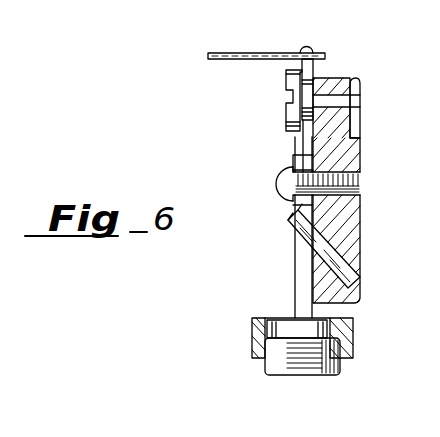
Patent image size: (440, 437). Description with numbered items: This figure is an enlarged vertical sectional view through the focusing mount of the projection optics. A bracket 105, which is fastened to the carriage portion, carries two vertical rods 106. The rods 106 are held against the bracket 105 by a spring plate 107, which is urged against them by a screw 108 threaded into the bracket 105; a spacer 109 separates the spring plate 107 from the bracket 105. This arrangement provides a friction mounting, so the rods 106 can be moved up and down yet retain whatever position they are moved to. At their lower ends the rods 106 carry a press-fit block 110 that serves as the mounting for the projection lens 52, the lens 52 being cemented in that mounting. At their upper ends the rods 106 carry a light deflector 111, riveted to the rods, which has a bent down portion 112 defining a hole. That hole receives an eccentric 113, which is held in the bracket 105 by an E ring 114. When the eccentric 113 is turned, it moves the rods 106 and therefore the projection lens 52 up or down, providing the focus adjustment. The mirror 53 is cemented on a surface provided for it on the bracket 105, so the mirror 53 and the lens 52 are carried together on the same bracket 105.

The projection lens 52 is at (297, 377).
The mirror 53 is at (288, 222).
The bracket 105 is at (362, 150).
The vertical rods 106 is at (295, 288).
The spring plate 107 is at (293, 158).
The screw 108 is at (360, 203).
The spacer 109 is at (293, 210).
The block 110 is at (252, 338).
The light deflector 111 is at (216, 52).
The bent down portion 112 is at (320, 76).
The eccentric 113 is at (286, 78).
The E ring 114 is at (362, 82).